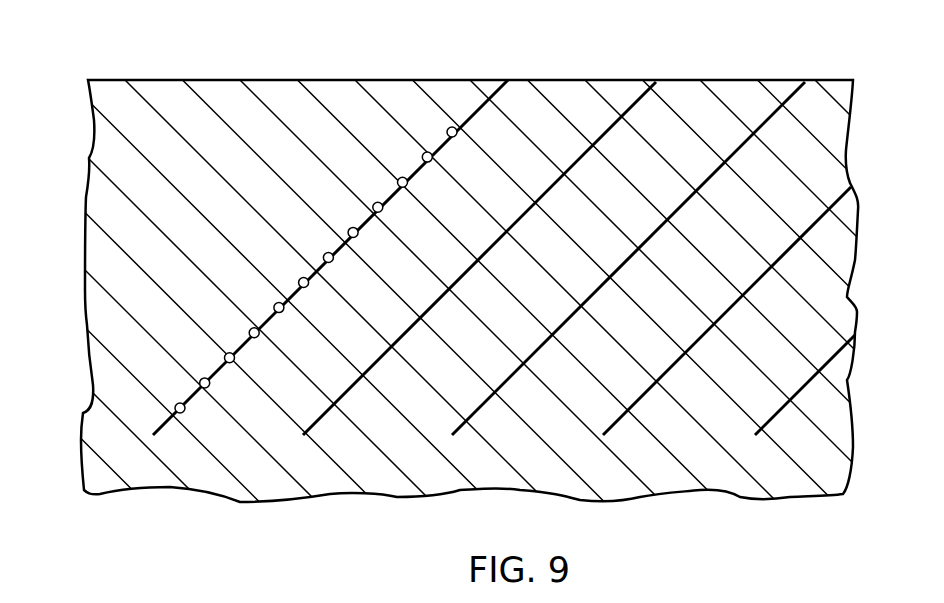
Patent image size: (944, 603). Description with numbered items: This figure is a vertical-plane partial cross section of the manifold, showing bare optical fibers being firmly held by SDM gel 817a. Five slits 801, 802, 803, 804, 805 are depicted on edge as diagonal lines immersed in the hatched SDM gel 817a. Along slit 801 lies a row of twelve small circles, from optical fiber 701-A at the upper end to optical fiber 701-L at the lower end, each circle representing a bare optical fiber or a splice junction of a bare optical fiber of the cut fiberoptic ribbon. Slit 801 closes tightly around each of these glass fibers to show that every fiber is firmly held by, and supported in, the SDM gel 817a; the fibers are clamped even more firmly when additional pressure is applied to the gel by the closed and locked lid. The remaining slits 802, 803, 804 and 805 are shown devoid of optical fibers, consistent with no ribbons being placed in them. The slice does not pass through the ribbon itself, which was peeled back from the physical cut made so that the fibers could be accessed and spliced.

The SDM gel 817a is at (172, 98).
The optical fiber 701-A is at (447, 129).
The optical fiber 701-L is at (176, 404).
The slit 801 is at (489, 93).
The slit 802 is at (643, 88).
The slit 803 is at (782, 95).
The slit 804 is at (643, 395).
The slit 805 is at (777, 417).